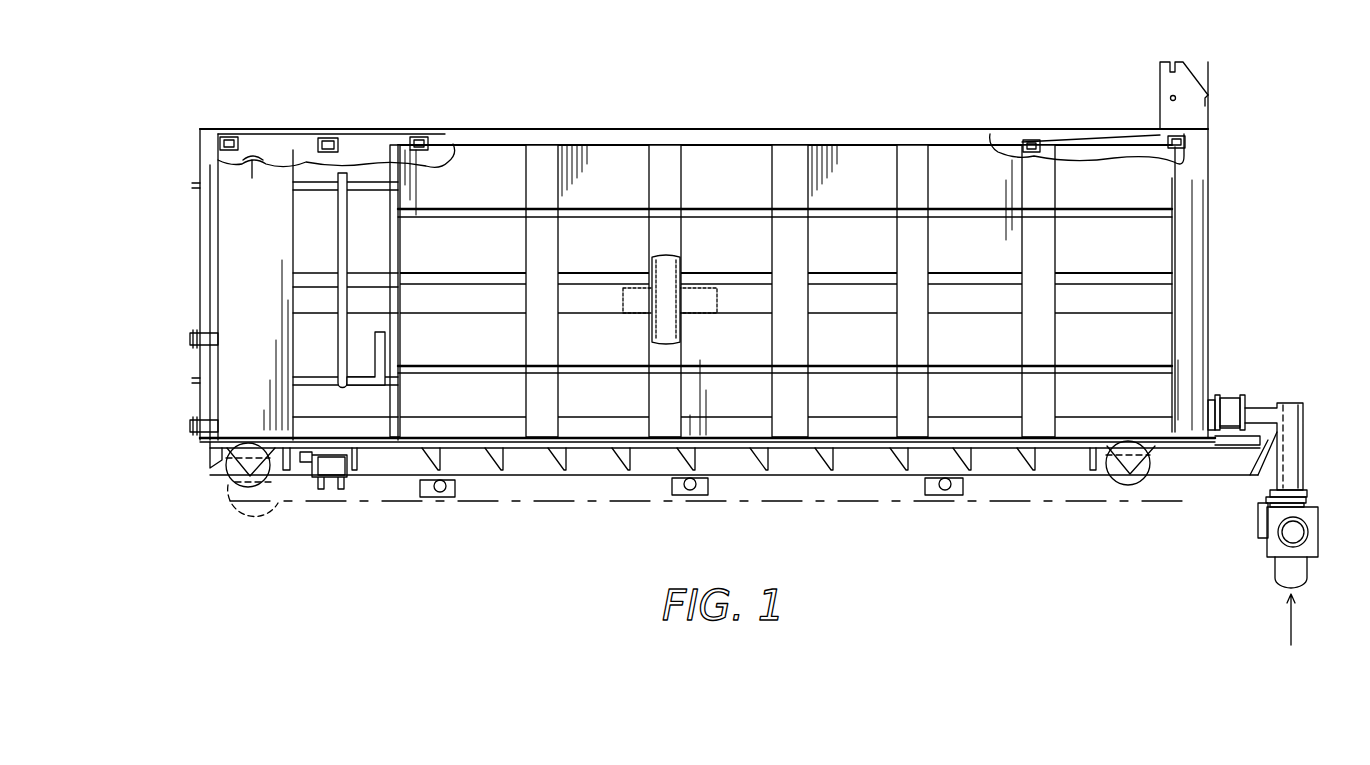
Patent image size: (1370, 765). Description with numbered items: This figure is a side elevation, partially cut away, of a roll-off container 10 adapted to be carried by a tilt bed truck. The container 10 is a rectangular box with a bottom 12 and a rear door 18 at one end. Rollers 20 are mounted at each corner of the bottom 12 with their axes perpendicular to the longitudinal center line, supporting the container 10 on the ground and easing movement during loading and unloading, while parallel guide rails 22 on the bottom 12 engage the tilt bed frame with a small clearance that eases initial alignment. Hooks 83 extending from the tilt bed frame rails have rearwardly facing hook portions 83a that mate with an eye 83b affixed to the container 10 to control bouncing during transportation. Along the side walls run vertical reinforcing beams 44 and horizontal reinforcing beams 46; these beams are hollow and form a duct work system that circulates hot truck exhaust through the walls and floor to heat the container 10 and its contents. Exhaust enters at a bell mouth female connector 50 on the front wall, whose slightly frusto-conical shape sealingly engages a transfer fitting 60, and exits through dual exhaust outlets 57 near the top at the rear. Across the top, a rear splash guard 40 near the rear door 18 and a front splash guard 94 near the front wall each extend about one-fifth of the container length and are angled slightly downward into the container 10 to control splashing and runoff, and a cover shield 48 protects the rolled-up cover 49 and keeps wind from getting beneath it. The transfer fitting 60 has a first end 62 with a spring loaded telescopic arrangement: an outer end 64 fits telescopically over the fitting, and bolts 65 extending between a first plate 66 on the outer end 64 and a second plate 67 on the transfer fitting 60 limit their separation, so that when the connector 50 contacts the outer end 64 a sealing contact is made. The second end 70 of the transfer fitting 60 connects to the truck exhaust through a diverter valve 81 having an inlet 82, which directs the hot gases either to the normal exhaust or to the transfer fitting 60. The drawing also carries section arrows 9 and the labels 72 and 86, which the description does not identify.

The container 10 is at (724, 150).
The bottom 12 is at (806, 455).
The rear door 18 is at (200, 270).
The rollers 20 is at (238, 462).
The guide rails 22 is at (545, 488).
The rear splash guard 40 is at (395, 140).
The vertical reinforcing beams 44 is at (420, 242).
The horizontal reinforcing beams 46 is at (864, 130).
The cover shield 48 is at (1198, 84).
The cover 49 is at (1168, 100).
The bell mouth female connector 50 is at (1207, 393).
The dual exhaust outlets 57 is at (258, 165).
The transfer fitting 60 is at (1290, 403).
The first end 62 is at (1253, 393).
The outer end 64 is at (1208, 412).
The bolts 65 is at (1236, 430).
The first plate 66 is at (1215, 405).
The second plate 67 is at (1250, 413).
The second end 70 is at (1266, 492).
The bracket 72 is at (1262, 535).
The diverter valve 81 is at (1312, 515).
The inlet 82 is at (1295, 570).
The hooks 83 is at (340, 465).
The hook portions 83a is at (334, 458).
The eye 83b is at (298, 460).
The mounting plate 86 is at (1270, 503).
The section line 9 is at (500, 392).
The front splash guard 94 is at (1060, 135).